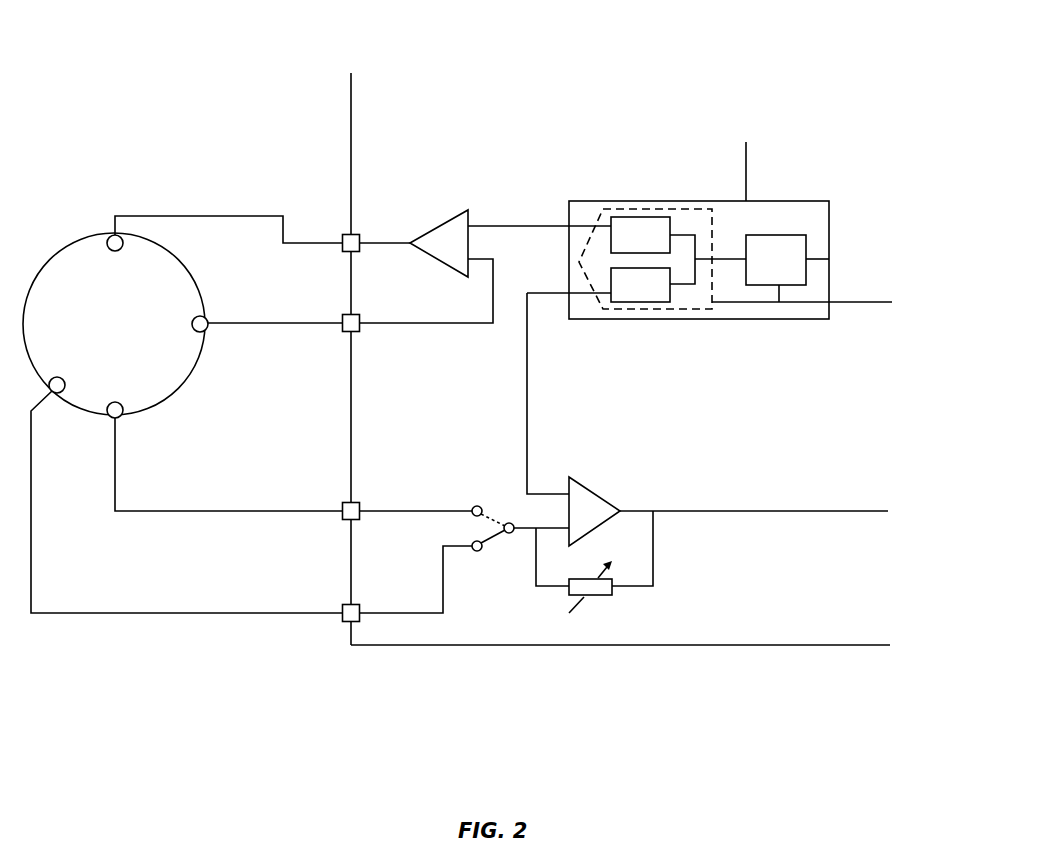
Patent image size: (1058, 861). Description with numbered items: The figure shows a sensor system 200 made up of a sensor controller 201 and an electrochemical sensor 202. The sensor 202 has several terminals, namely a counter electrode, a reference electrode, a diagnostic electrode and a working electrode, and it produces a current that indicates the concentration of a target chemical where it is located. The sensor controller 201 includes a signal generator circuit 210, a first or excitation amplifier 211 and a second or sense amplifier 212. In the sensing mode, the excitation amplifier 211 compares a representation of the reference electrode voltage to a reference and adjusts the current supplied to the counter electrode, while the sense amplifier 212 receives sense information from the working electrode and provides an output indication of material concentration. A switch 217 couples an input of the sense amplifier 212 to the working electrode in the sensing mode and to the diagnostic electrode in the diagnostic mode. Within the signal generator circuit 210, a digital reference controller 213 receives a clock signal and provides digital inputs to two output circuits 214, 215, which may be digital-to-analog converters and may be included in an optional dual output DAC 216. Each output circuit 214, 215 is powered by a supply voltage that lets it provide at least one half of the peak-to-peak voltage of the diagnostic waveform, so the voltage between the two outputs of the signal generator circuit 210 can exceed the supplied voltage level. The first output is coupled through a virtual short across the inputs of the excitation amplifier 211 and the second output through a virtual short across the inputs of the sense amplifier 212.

The sensor system 200 is at (214, 34).
The sensor controller 201 is at (351, 133).
The electrochemical sensor 202 is at (43, 272).
The signal generator circuit 210 is at (804, 201).
The excitation amplifier 211 is at (433, 226).
The sense amplifier 212 is at (597, 493).
The digital reference controller 213 is at (806, 259).
The output circuit 214 is at (635, 217).
The output circuit 215 is at (648, 302).
The dual output DAC 216 is at (713, 284).
The switch 217 is at (496, 533).